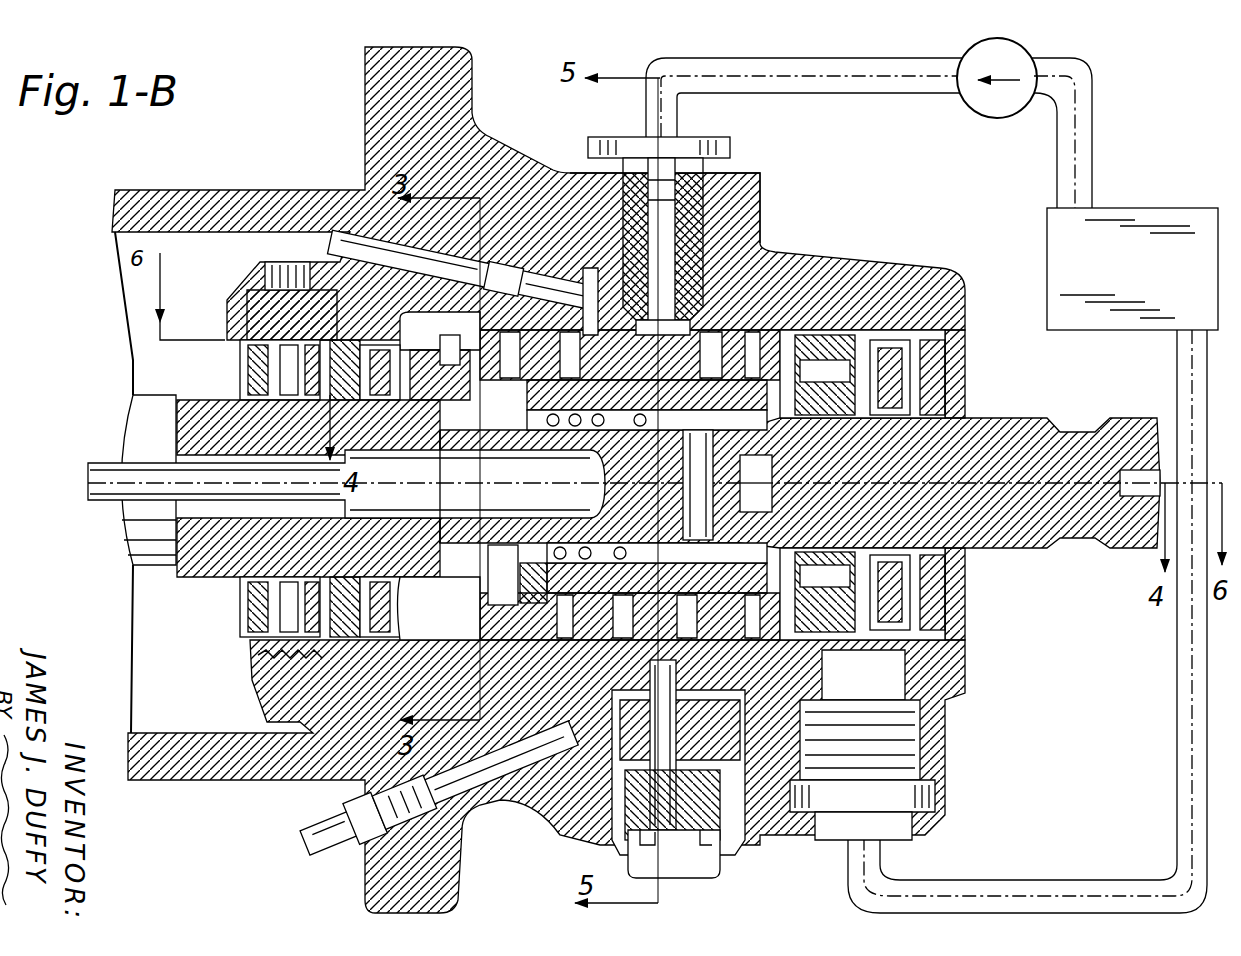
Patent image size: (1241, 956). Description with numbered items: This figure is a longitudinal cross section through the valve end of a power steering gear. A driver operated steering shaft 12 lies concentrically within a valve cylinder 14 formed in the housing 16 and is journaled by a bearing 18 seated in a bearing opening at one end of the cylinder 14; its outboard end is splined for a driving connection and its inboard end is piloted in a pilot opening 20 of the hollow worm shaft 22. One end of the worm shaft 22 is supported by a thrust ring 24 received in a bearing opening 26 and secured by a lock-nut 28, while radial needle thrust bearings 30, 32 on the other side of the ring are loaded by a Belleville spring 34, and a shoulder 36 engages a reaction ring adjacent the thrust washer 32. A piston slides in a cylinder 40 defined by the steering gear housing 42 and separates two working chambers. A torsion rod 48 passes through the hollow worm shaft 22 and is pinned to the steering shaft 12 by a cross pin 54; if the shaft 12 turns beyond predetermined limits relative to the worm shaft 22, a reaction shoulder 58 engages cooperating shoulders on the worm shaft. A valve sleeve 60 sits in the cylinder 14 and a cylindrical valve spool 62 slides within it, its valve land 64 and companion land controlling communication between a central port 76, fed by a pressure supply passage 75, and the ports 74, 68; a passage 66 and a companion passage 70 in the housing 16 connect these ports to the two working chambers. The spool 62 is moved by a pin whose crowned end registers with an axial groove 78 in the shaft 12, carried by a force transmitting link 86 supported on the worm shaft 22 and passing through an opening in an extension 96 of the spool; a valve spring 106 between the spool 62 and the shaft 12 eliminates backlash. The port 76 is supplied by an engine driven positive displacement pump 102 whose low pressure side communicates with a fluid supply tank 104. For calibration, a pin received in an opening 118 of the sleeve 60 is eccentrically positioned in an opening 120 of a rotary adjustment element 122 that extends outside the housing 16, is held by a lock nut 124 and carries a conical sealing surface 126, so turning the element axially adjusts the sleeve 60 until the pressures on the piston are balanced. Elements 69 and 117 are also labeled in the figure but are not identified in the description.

The steering shaft 12 is at (1118, 420).
The valve cylinder 14 is at (798, 330).
The housing 16 is at (542, 838).
The bearing 18 is at (830, 365).
The pilot opening 20 is at (428, 505).
The worm shaft 22 is at (126, 440).
The thrust ring 24 is at (245, 655).
The bearing opening 26 is at (258, 314).
The lock-nut 28 is at (232, 332).
The radial needle thrust bearing 30 is at (262, 615).
The radial needle thrust bearing 32 is at (410, 632).
The Belleville spring 34 is at (245, 605).
The shoulder 36 is at (412, 605).
The cylinder 40 is at (168, 232).
The steering gear housing 42 is at (247, 193).
The torsion rod 48 is at (756, 483).
The cross pin 54 is at (756, 499).
The reaction shoulder 58 is at (480, 640).
The valve sleeve 60 is at (790, 432).
The valve spool 62 is at (798, 540).
The valve land 64 is at (630, 262).
The passage 66 is at (800, 600).
The valve port 68 is at (862, 745).
The pin 69 is at (343, 240).
The companion passage 70 is at (478, 820).
The port 74 is at (520, 600).
The pressure supply passage 75 is at (760, 218).
The central port 76 is at (693, 300).
The axial groove 78 is at (445, 435).
The force transmitting link 86 is at (523, 325).
The extension 96 is at (440, 370).
The positive displacement pump 102 is at (993, 98).
The fluid supply tank 104 is at (1168, 190).
The valve spring 106 is at (520, 560).
The valve seat 117 is at (622, 692).
The opening 118 is at (705, 540).
The opening 120 is at (625, 705).
The rotary adjustment element 122 is at (686, 872).
The lock nut 124 is at (612, 830).
The conical sealing surface 126 is at (705, 715).